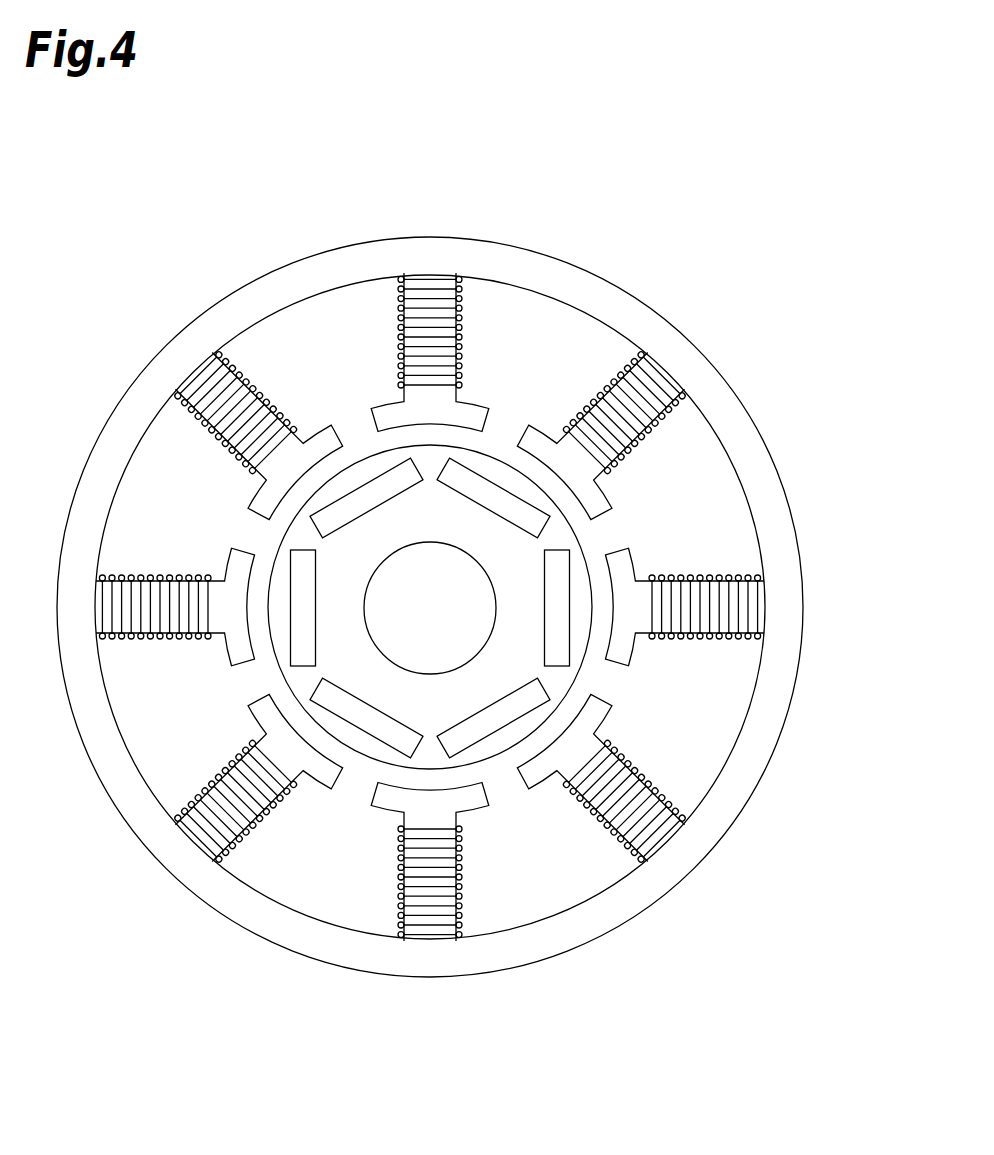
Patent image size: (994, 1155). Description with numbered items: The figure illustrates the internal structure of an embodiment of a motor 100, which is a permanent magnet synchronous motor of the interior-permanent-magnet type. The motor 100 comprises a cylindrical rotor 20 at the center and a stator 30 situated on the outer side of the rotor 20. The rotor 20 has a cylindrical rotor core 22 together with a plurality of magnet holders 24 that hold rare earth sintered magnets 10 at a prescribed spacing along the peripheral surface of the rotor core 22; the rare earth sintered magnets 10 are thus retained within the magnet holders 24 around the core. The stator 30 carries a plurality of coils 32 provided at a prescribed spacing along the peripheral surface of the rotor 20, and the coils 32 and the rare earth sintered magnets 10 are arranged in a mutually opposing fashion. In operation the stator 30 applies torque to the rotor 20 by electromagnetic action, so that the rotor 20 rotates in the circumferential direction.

The motor 100 is at (628, 178).
The stator 30 is at (738, 390).
The coil 32 is at (443, 276).
The rotor 20 is at (570, 1022).
The rotor core 22 is at (425, 770).
The magnet holder 24 is at (370, 737).
The rare earth sintered magnet 10 is at (488, 722).